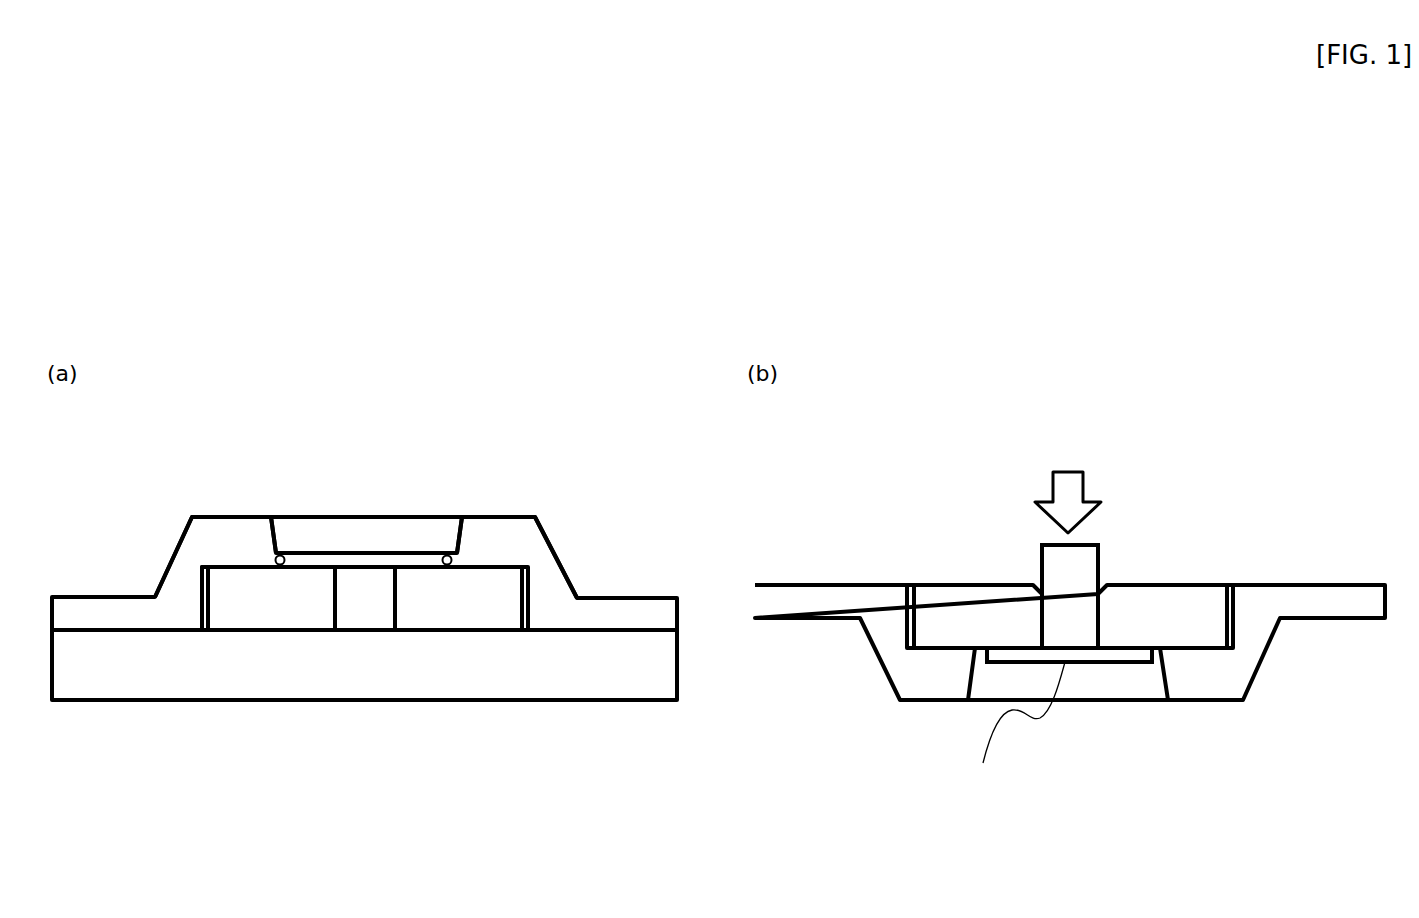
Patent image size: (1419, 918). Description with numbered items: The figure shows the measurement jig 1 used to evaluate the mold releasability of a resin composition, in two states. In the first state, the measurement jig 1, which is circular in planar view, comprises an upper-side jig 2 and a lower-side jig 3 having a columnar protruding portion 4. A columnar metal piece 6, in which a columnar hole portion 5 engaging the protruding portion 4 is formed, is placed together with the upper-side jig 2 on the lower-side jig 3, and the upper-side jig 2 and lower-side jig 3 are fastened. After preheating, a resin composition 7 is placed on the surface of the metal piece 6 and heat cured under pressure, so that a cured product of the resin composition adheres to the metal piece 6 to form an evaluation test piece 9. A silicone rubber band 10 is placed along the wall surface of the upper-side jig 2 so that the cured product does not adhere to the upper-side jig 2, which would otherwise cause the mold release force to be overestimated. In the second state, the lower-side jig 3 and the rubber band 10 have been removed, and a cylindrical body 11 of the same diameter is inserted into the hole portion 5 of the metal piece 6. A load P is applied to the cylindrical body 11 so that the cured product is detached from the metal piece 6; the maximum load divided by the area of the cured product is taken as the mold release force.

The measurement jig 1 is at (556, 497).
The upper-side jig 2 is at (605, 598).
The lower-side jig 3 is at (587, 673).
The protruding portion 4 is at (368, 605).
The hole portion 5 is at (330, 603).
The metal piece 6 is at (217, 600).
The resin composition 7 is at (375, 553).
The evaluation test piece 9 is at (340, 553).
The silicone rubber band 10 is at (276, 558).
The cylindrical body 11 is at (1042, 575).